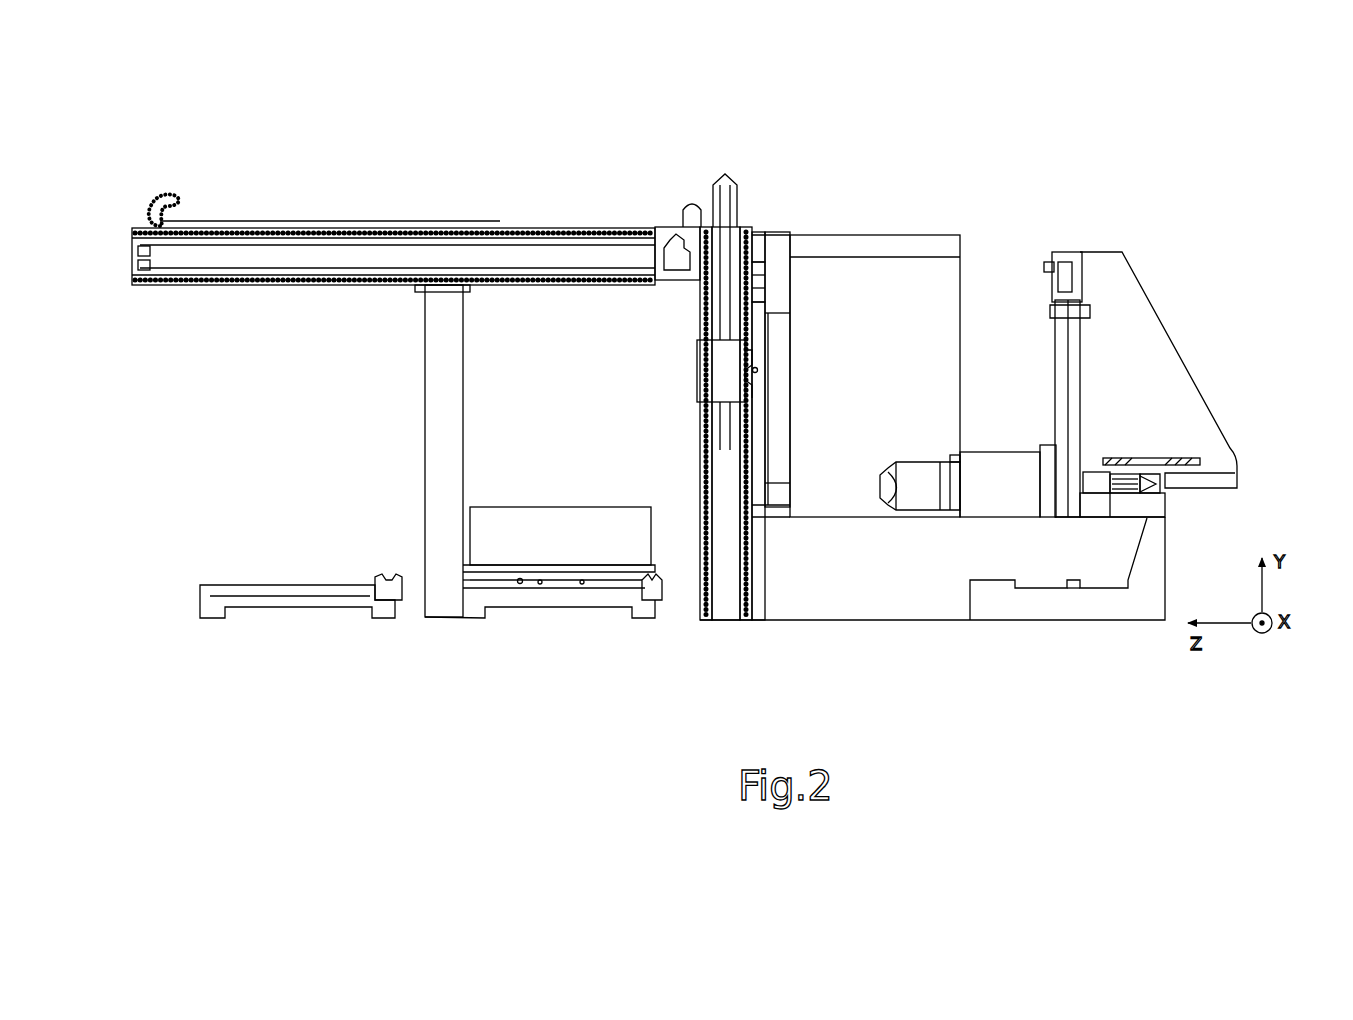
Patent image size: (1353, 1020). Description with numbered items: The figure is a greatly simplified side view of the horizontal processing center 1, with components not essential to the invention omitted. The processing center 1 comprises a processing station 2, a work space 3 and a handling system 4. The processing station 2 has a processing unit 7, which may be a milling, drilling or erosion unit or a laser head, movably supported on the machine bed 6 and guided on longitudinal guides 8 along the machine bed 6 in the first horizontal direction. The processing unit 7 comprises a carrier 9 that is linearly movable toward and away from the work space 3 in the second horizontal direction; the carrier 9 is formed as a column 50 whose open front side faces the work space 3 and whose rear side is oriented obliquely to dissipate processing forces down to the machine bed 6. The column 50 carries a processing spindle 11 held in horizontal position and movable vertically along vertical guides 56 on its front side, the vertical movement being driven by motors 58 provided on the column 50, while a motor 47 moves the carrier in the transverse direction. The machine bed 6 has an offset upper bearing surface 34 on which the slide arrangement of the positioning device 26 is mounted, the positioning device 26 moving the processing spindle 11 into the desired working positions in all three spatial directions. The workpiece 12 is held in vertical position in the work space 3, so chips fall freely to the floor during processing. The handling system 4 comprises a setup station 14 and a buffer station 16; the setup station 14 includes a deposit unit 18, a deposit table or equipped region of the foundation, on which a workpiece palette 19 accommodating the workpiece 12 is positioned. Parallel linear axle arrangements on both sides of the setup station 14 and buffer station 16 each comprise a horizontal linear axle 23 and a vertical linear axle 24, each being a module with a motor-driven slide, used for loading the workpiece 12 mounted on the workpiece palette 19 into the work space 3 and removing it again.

The processing center 1 is at (170, 152).
The processing station 2 is at (1045, 185).
The work space 3 is at (820, 190).
The handling system 4 is at (270, 192).
The machine bed 6 is at (1030, 608).
The processing unit 7 is at (985, 395).
The longitudinal guides 8 is at (1085, 597).
The carrier 9 is at (1175, 265).
The processing spindle 11 is at (930, 490).
The workpiece 12 is at (780, 435).
The setup station 14 is at (190, 645).
The buffer station 16 is at (490, 653).
The deposit unit 18 is at (285, 590).
The workpiece palette 19 is at (760, 343).
The horizontal linear axle 23 is at (425, 265).
The vertical linear axle 24 is at (720, 300).
The positioning device 26 is at (1150, 440).
The upper bearing surface 34 is at (1040, 580).
The motor 47 is at (1150, 480).
The column 50 is at (1150, 355).
The vertical guides 56 is at (1055, 385).
The motors 58 is at (1065, 250).